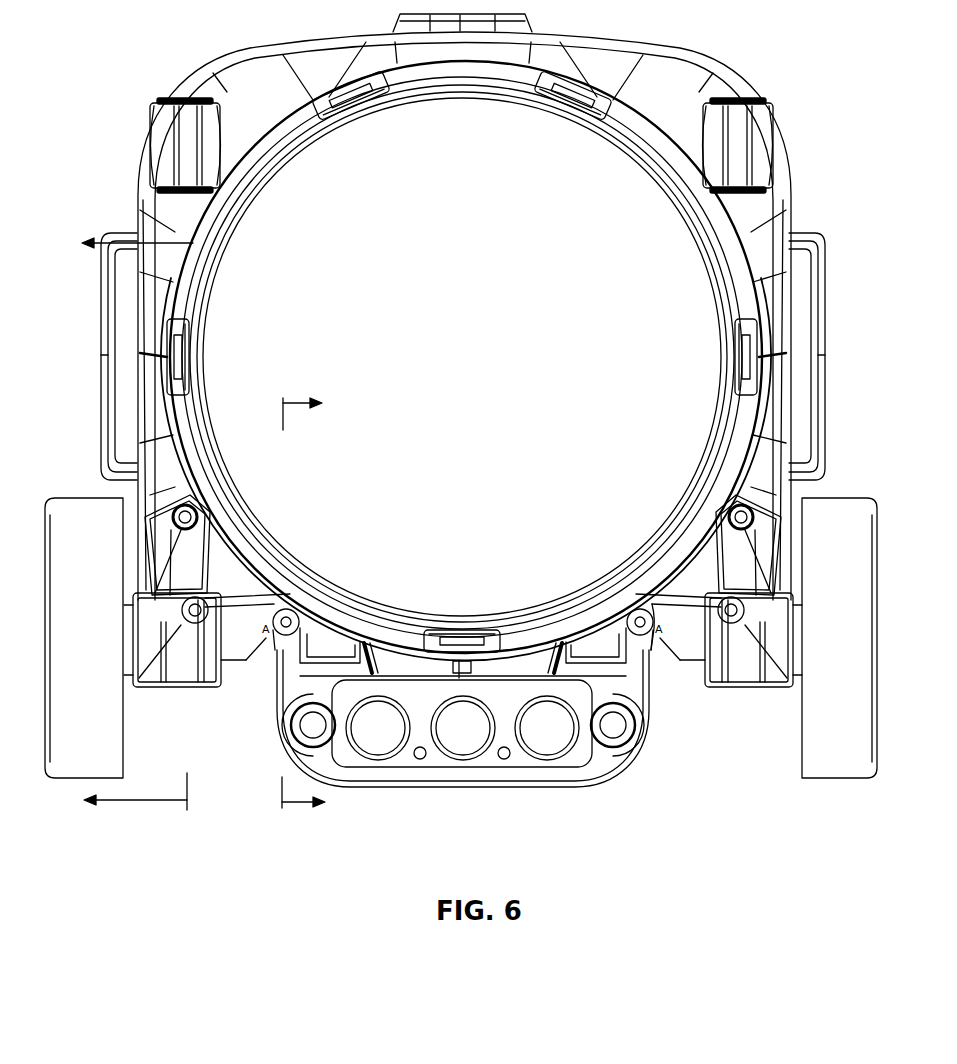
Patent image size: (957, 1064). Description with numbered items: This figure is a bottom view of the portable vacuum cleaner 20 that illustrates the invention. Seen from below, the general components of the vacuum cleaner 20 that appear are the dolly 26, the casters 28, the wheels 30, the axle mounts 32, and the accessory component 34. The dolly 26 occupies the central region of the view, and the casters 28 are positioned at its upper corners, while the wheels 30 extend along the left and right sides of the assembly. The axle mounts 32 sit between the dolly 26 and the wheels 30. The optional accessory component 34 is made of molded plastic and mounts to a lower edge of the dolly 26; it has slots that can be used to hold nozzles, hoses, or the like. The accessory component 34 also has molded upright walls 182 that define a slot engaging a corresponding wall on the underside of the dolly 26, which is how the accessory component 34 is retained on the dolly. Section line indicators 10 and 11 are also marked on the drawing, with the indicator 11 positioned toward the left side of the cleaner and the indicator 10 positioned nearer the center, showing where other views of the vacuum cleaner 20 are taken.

The section line 10 is at (296, 604).
The section line 11 is at (129, 525).
The portable vacuum cleaner 20 is at (792, 192).
The dolly 26 is at (664, 100).
The casters 28 is at (165, 120).
The wheels 30 is at (88, 757).
The axle mounts 32 is at (757, 667).
The accessory component 34 is at (514, 764).
The molded upright walls 182 is at (641, 641).